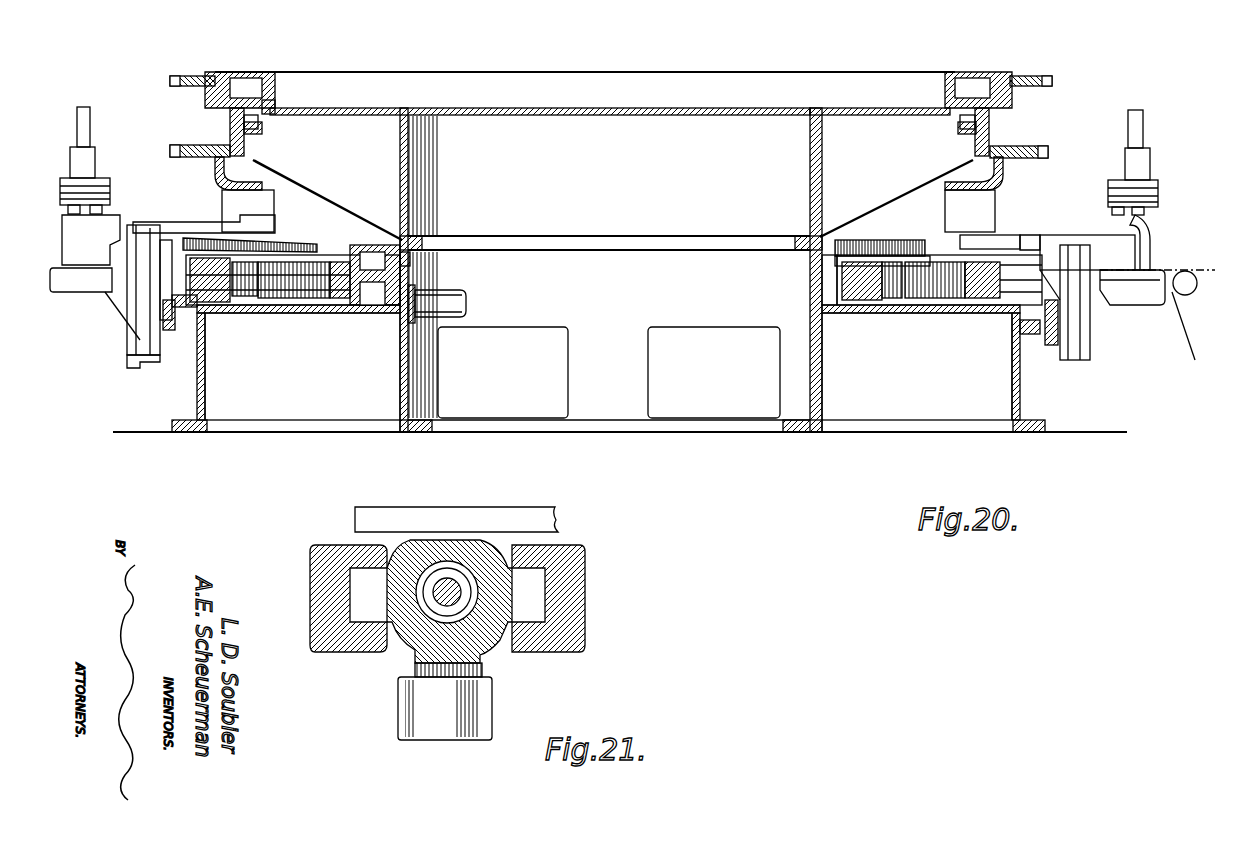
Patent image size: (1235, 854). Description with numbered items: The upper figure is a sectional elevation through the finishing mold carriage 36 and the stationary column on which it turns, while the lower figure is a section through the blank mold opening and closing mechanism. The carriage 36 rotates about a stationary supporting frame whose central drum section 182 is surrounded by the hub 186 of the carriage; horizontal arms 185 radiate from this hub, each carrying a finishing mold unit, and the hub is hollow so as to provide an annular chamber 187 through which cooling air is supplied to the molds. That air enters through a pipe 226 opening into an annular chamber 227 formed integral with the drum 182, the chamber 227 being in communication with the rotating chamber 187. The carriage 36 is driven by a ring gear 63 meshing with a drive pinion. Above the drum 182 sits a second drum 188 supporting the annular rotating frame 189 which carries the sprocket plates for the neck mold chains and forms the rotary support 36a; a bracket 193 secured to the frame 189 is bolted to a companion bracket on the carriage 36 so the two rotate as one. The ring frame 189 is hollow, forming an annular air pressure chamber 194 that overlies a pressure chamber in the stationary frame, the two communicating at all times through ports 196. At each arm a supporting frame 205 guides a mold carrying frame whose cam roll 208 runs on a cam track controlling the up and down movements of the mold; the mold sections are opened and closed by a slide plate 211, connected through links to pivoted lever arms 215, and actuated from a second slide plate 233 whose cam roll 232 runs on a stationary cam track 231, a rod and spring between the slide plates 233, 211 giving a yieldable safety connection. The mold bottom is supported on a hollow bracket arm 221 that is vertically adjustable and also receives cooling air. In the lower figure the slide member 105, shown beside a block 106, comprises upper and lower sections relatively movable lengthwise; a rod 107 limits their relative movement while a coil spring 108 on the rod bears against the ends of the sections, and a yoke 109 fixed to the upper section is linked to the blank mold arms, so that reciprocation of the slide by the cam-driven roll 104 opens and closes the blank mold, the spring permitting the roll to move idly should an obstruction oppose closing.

In FIG. 20, the finishing mold carriage 36 is at (330, 233).
In FIG. 20, the rotary support 36a is at (1030, 124).
In FIG. 20, the ring gear 63 is at (232, 302).
In FIG. 21, the roll 104 is at (478, 715).
In FIG. 21, the slide member 105 is at (415, 640).
In FIG. 21, the block 106 is at (575, 595).
In FIG. 21, the rod 107 is at (462, 580).
In FIG. 21, the coil spring 108 is at (447, 578).
In FIG. 21, the yoke 109 is at (532, 512).
In FIG. 20, the central drum section 182 is at (812, 300).
In FIG. 20, the horizontal arm 185 is at (303, 240).
In FIG. 20, the hub 186 is at (372, 240).
In FIG. 20, the annular chamber 187 is at (412, 258).
In FIG. 20, the second drum 188 is at (400, 178).
In FIG. 20, the annular rotating frame 189 is at (236, 80).
In FIG. 20, the bracket 193 is at (228, 124).
In FIG. 20, the annular air pressure chamber 194 is at (268, 86).
In FIG. 20, the ports 196 is at (262, 122).
In FIG. 20, the supporting frame 205 is at (160, 364).
In FIG. 20, the cam roll 208 is at (1045, 345).
In FIG. 20, the slide plate 211 is at (1010, 238).
In FIG. 20, the lever arm 215 is at (130, 226).
In FIG. 20, the hollow bracket arm 221 is at (1128, 298).
In FIG. 20, the pipe 226 is at (468, 303).
In FIG. 20, the annular chamber 227 is at (380, 325).
In FIG. 20, the stationary cam track 231 is at (282, 305).
In FIG. 20, the cam roll 232 is at (246, 297).
In FIG. 20, the slide plate 233 is at (890, 258).